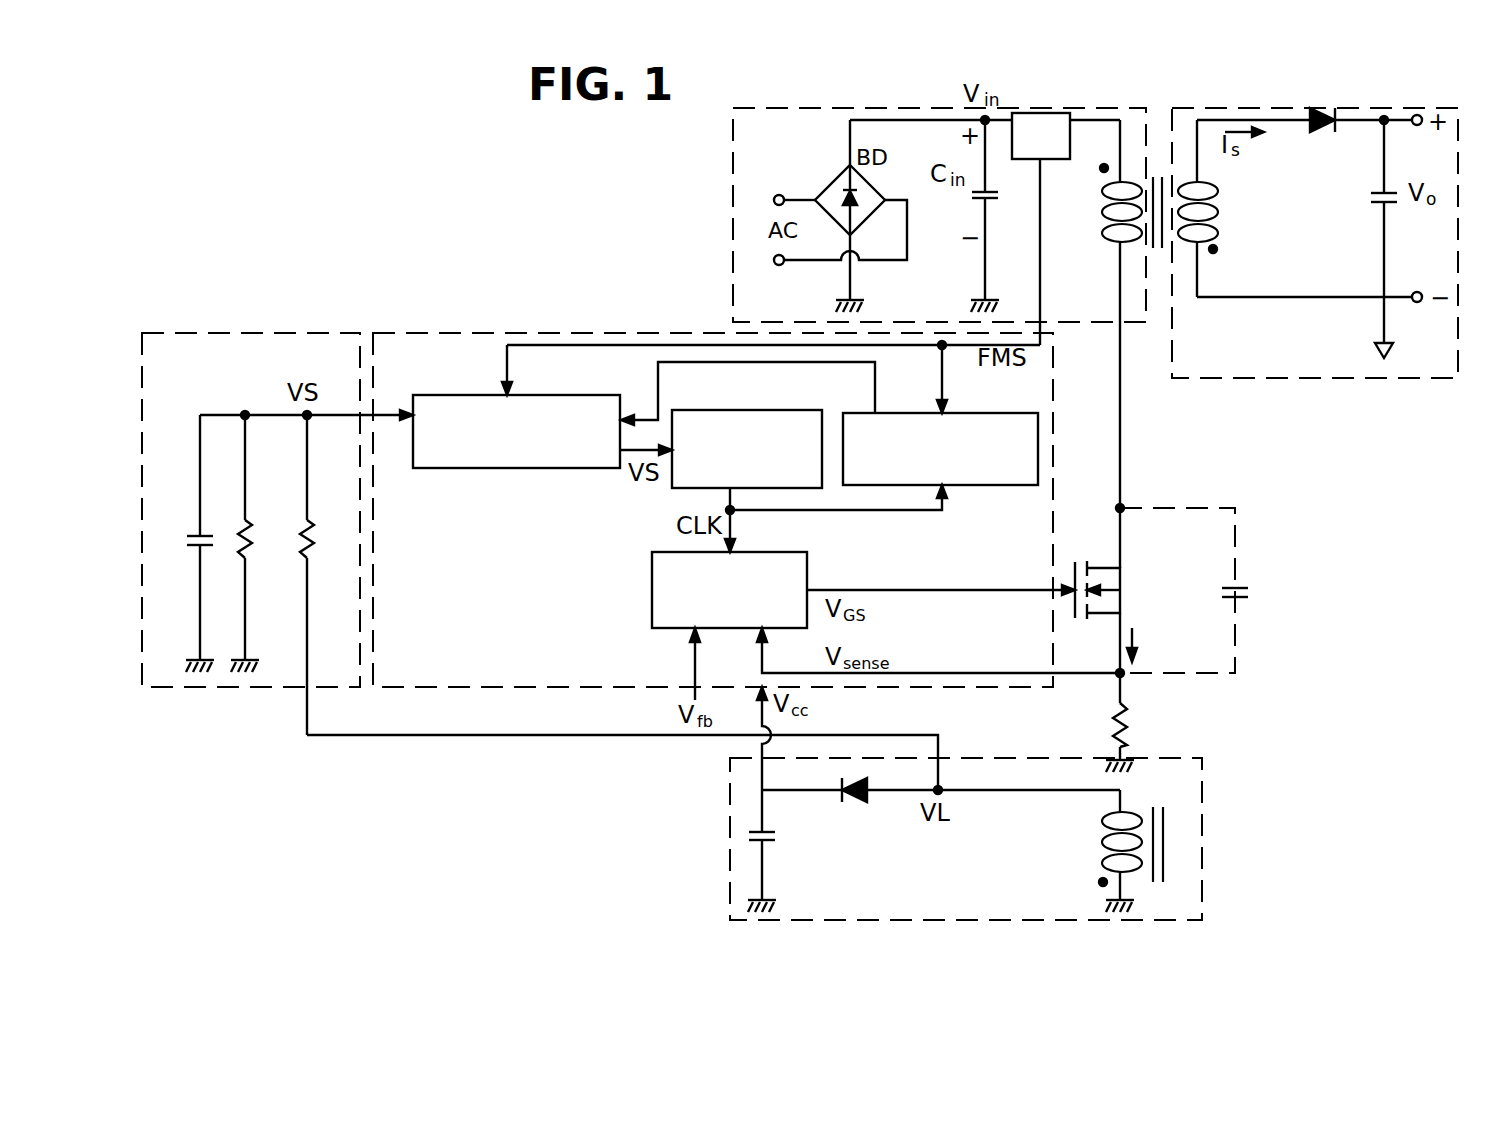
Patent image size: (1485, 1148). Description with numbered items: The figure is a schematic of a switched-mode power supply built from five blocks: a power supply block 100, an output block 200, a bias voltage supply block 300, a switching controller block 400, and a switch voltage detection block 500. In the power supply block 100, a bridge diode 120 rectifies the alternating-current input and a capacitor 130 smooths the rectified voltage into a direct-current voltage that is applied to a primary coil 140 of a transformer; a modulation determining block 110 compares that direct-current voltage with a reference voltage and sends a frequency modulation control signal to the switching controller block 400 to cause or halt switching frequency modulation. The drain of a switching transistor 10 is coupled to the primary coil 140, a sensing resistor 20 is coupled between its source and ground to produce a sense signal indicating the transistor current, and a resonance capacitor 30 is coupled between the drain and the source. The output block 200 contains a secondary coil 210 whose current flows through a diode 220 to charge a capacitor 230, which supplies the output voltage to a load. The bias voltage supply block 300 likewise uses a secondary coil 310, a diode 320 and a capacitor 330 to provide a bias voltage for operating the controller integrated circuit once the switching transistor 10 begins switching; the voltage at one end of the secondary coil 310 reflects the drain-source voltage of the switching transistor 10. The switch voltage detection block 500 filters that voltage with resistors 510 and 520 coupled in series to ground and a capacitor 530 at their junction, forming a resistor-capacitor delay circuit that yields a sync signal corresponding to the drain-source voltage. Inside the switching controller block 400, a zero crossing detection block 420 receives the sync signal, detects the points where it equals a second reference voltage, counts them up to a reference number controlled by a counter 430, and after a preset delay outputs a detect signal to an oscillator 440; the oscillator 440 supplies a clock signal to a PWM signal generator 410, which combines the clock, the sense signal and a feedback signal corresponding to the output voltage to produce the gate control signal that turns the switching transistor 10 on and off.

The power supply block 100 is at (733, 206).
The modulation determining block 110 is at (1068, 114).
The bridge diode 120 is at (838, 180).
The capacitor 130 is at (997, 201).
The primary coil 140 is at (1108, 240).
The output block 200 is at (1298, 378).
The secondary coil 210 is at (1218, 196).
The diode 220 is at (1322, 134).
The capacitor 230 is at (1372, 205).
The bias voltage supply block 300 is at (730, 808).
The secondary coil 310 is at (1100, 862).
The diode 320 is at (868, 796).
The capacitor 330 is at (750, 840).
The switching controller block 400 is at (648, 332).
The PWM signal generator 410 is at (652, 592).
The zero crossing detection block 420 is at (556, 395).
The counter 430 is at (907, 400).
The oscillator 440 is at (742, 410).
The switch voltage detection block 500 is at (210, 333).
The resistor 510 is at (312, 560).
The resistor 520 is at (250, 560).
The capacitor 530 is at (190, 549).
The switching transistor 10 is at (1118, 578).
The sensing resistor 20 is at (1112, 716).
The resonance capacitor 30 is at (1246, 602).